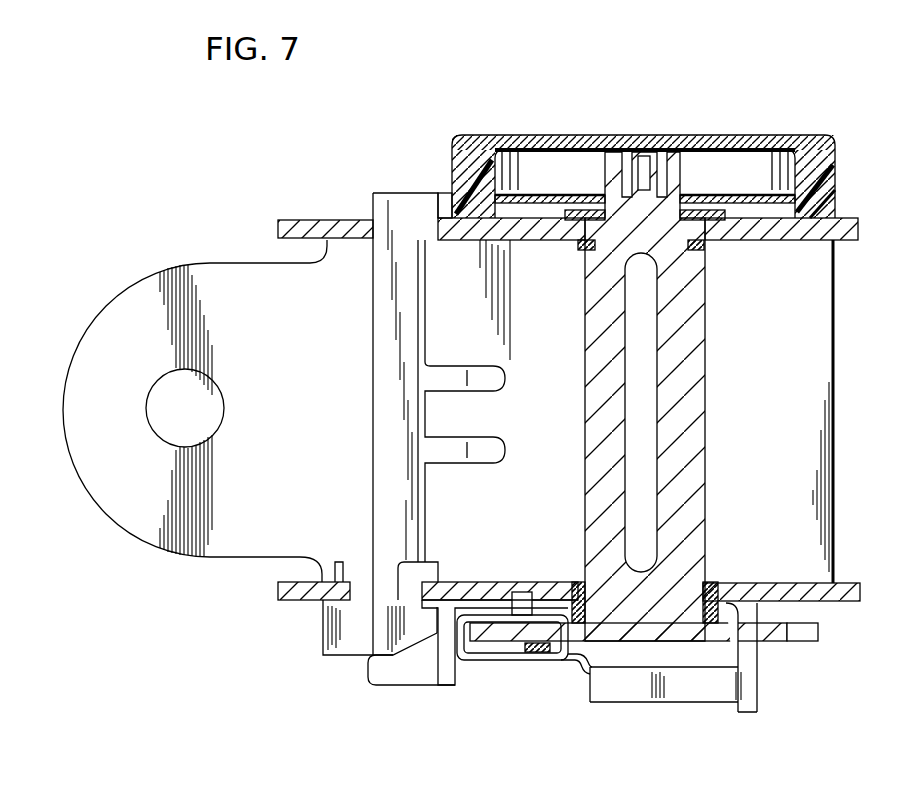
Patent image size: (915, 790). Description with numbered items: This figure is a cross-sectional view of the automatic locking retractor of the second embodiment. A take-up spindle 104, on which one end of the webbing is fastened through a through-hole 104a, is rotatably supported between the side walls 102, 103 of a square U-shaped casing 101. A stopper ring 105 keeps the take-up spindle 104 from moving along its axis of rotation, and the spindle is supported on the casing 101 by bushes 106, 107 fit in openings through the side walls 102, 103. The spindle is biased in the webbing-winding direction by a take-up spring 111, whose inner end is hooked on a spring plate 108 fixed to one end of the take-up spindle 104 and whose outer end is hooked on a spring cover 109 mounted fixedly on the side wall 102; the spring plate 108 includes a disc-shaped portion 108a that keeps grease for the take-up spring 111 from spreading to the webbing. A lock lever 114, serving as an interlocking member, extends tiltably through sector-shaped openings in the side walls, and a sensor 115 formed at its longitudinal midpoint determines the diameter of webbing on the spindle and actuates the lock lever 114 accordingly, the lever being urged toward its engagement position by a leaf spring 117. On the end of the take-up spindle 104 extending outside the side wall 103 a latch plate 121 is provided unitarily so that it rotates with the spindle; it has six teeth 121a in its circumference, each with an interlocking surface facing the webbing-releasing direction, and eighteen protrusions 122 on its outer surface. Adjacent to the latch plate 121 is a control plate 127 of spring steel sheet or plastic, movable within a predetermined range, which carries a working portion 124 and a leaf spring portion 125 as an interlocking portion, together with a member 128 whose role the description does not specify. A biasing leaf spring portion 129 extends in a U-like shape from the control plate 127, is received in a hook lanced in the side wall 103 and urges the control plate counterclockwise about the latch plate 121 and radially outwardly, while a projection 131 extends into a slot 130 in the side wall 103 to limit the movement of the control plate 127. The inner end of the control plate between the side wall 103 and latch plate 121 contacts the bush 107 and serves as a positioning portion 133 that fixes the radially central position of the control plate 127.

The casing 101 is at (217, 282).
The side wall 102 is at (853, 219).
The side wall 103 is at (858, 584).
The take-up spindle 104 is at (696, 498).
The through-hole 104a is at (643, 340).
The stopper ring 105 is at (583, 200).
The bush 106 is at (712, 245).
The bush 107 is at (732, 590).
The spring plate 108 is at (485, 165).
The disc-shaped portion 108a is at (740, 185).
The spring cover 109 is at (454, 151).
The take-up spring 111 is at (518, 172).
The lock lever 114 is at (415, 673).
The sensor 115 is at (483, 443).
The leaf spring 117 is at (379, 628).
The latch plate 121 is at (680, 624).
The teeth 121a is at (815, 640).
The protrusions 122 is at (534, 654).
The working portion 124 is at (456, 640).
The leaf spring portion 125 is at (560, 654).
The control plate 127 is at (488, 662).
The tab 128 is at (756, 703).
The biasing leaf spring portion 129 is at (648, 688).
The slot 130 is at (538, 591).
The projection 131 is at (512, 591).
The positioning portion 133 is at (577, 591).